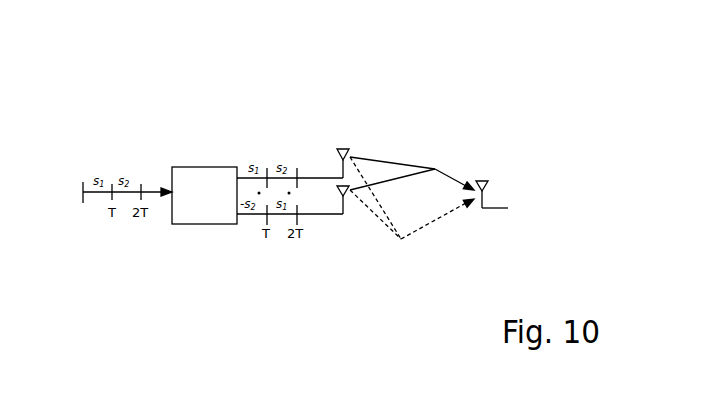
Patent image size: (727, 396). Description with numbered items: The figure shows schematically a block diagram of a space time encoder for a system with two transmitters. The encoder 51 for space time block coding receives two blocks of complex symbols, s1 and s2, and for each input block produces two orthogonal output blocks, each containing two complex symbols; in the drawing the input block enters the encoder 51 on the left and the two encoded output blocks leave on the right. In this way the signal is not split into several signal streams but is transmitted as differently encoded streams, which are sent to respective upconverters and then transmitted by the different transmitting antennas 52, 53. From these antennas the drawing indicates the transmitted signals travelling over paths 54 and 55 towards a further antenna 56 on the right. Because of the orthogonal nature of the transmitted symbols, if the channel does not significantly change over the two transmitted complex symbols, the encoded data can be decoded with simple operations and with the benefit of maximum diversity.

The encoder 51 is at (204, 195).
The transmitting antenna 52 is at (343, 144).
The transmitting antenna 53 is at (348, 200).
The direct propagation paths 54 is at (395, 159).
The reflected propagation paths 55 is at (432, 228).
The receive antenna 56 is at (488, 169).